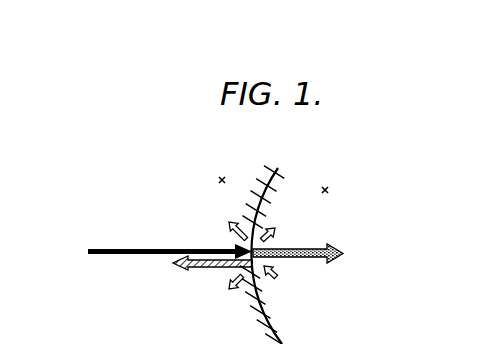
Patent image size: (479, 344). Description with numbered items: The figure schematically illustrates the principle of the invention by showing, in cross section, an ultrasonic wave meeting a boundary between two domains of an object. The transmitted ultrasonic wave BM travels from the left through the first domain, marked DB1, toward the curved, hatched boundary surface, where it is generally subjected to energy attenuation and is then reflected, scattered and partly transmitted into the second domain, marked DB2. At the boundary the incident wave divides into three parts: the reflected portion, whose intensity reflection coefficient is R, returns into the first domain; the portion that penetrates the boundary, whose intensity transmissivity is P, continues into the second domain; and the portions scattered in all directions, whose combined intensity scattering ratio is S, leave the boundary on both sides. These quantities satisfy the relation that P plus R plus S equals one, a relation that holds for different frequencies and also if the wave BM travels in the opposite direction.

The transmitted ultrasonic wave BM is at (95, 252).
The intensity reflection coefficient R is at (199, 272).
The intensity transmissivity P is at (334, 250).
The intensity scattering ratio S is at (229, 236).
The first dielectric body (medium 1) DB1 is at (222, 177).
The second dielectric body (medium 2) DB2 is at (325, 188).